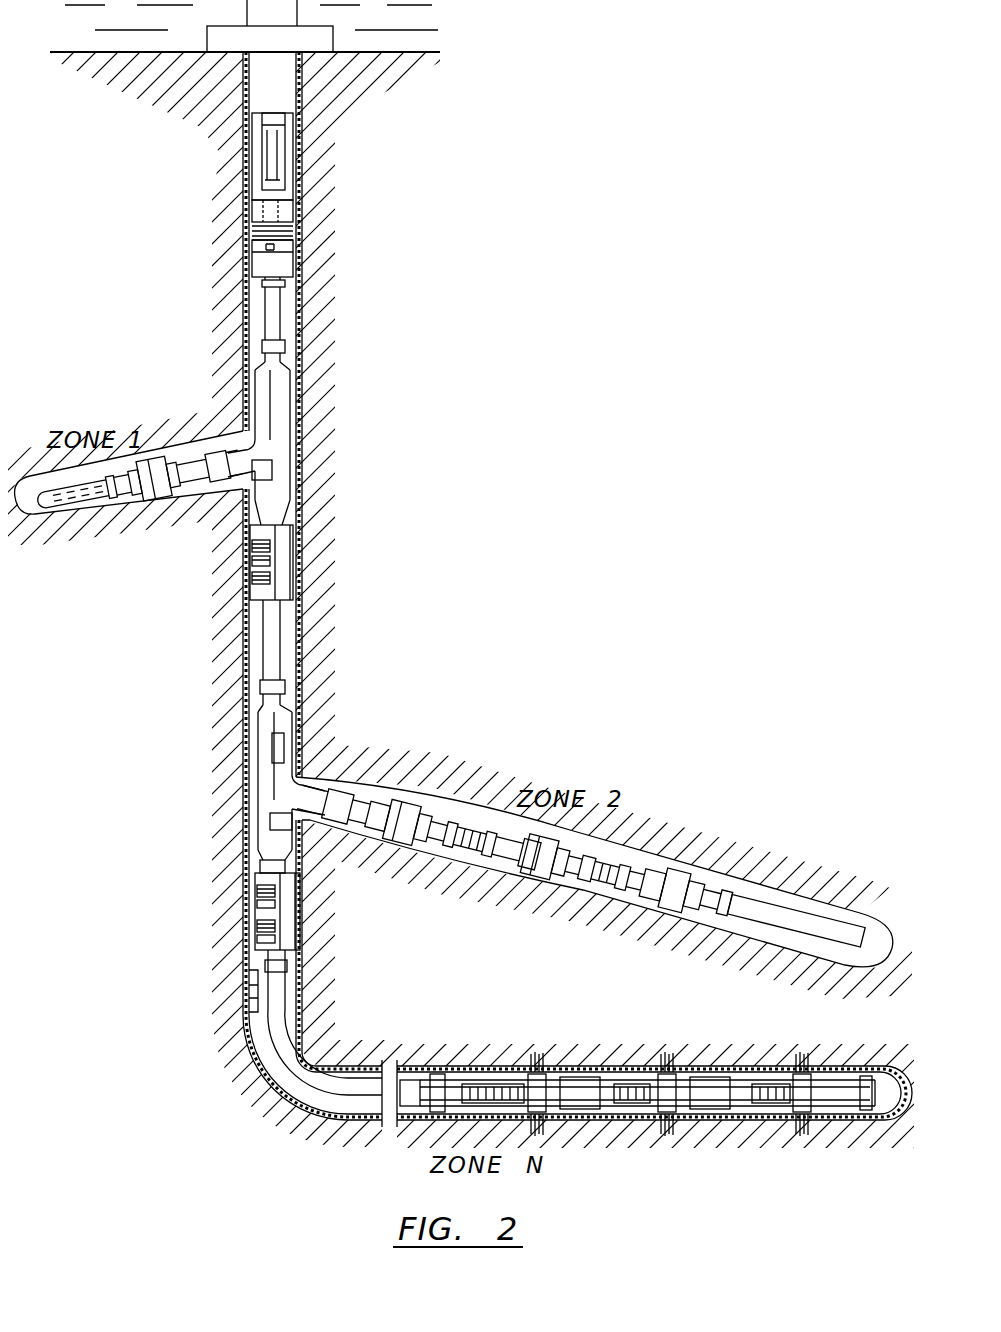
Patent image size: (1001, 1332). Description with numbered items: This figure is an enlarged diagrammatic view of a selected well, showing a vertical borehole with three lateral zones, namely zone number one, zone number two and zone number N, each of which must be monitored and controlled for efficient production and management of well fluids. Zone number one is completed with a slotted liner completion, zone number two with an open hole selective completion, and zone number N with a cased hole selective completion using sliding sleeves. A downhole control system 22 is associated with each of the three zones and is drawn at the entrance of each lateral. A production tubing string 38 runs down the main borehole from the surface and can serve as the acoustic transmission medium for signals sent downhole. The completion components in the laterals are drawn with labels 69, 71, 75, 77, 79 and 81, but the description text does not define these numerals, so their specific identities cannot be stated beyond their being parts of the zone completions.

The downhole control system 22 is at (210, 447).
The production tubing string 38 is at (281, 313).
The perforated tail pipe 69 is at (52, 507).
The packer 71 is at (163, 485).
The sliding sleeve 75 is at (443, 845).
The packer 77 is at (582, 1072).
The sand screen 79 is at (497, 1072).
The sliding sleeve valve 81 is at (580, 1071).